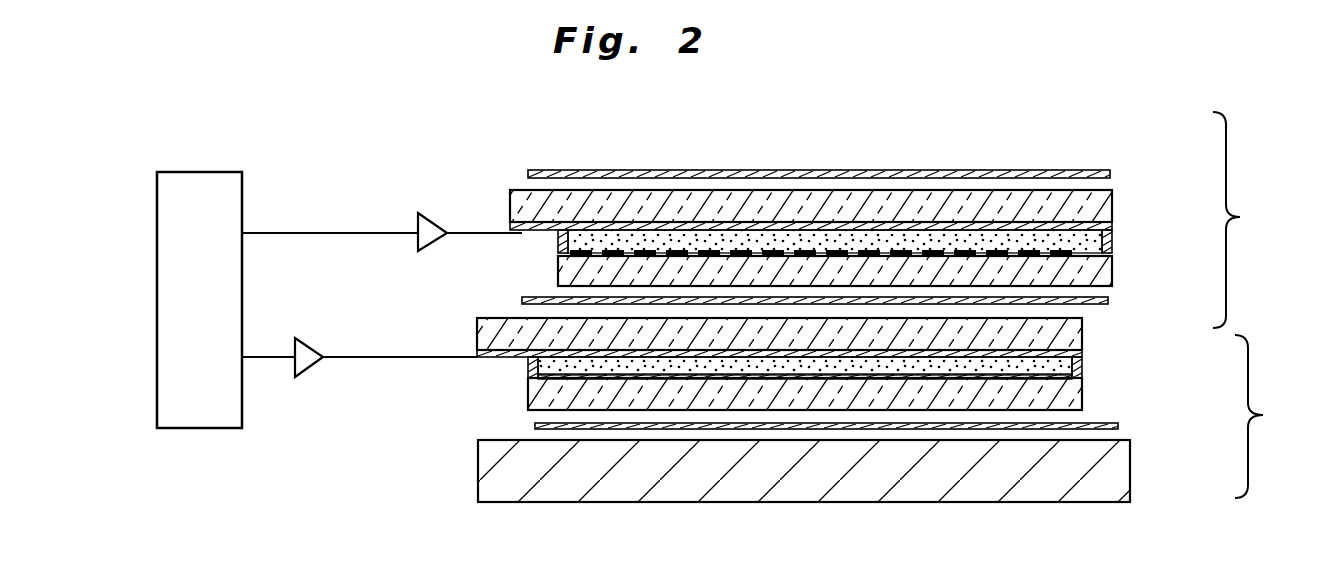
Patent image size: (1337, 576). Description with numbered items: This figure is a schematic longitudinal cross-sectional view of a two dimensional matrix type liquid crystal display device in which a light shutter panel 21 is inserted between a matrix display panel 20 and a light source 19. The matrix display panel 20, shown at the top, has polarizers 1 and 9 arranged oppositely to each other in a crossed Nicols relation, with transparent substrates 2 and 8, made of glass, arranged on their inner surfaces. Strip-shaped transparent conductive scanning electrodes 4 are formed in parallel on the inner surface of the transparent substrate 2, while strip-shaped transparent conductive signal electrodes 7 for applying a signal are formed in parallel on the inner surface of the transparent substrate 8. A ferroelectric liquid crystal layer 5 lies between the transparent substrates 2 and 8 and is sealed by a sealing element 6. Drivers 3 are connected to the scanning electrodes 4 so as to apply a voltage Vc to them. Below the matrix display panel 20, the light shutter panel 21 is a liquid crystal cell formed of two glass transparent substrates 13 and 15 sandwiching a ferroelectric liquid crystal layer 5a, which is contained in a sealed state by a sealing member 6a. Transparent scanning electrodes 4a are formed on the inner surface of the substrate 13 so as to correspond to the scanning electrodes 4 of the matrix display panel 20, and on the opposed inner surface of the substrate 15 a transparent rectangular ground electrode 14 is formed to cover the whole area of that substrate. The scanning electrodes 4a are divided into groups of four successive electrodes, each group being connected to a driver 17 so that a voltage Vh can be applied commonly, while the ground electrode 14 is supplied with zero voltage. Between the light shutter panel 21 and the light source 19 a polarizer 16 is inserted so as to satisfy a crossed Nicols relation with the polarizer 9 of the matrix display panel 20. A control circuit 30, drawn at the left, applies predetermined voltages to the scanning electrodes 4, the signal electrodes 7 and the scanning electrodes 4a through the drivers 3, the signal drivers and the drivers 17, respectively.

The polarizer 1 is at (1110, 174).
The transparent substrate 2 is at (1100, 206).
The driver 3 is at (428, 213).
The scanning electrode 4 is at (520, 233).
The scanning electrode 4a is at (478, 357).
The ferroelectric liquid crystal layer 5 is at (1106, 252).
The ferroelectric liquid crystal layer 5a is at (1082, 362).
The sealing element 6 is at (560, 242).
The sealing member 6a is at (530, 373).
The signal electrode 7 is at (575, 252).
The transparent substrate 8 is at (1100, 278).
The polarizer 9 is at (1108, 300).
The transparent substrate 13 is at (1065, 325).
The ground electrode 14 is at (1050, 378).
The transparent substrate 15 is at (541, 381).
The polarizer 16 is at (1118, 426).
The driver 17 is at (305, 338).
The light source 19 is at (1045, 478).
The matrix display panel 20 is at (1255, 220).
The light shutter panel 21 is at (1271, 416).
The control circuit 30 is at (213, 172).